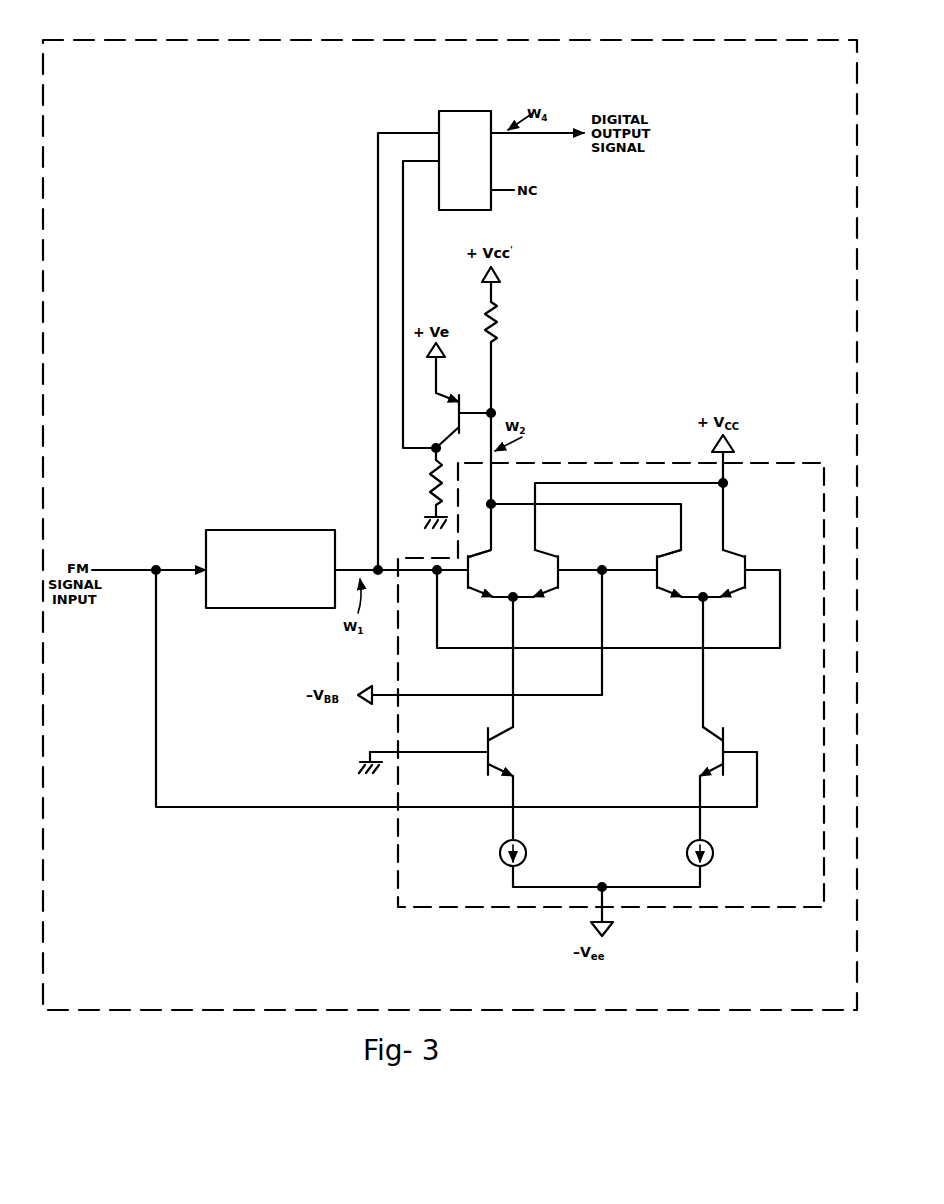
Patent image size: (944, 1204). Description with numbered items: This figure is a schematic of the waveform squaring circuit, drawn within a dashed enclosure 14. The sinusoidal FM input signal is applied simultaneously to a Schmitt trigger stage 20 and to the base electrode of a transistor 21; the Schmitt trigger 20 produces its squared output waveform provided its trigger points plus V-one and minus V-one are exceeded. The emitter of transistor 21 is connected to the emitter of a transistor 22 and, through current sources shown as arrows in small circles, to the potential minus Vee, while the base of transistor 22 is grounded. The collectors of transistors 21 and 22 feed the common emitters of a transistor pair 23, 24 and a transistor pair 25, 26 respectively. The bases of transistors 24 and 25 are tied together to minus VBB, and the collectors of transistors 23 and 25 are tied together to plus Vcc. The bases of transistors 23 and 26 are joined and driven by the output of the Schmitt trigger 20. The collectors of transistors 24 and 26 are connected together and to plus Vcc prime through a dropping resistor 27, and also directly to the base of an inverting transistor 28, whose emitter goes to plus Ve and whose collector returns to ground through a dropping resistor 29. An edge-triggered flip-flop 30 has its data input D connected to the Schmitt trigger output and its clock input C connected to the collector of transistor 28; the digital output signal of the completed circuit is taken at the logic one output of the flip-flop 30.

The FM demodulator / frequency discriminator circuit 14 is at (346, 40).
The Schmitt trigger stage 20 is at (275, 530).
The transistor 21 is at (727, 754).
The transistor 22 is at (485, 745).
The transistor 23 is at (748, 572).
The transistor 24 is at (655, 572).
The transistor 25 is at (561, 572).
The transistor 26 is at (466, 578).
The dropping resistor 27 is at (497, 335).
The inverting transistor 28 is at (461, 404).
The dropping resistor 29 is at (427, 471).
The flip-flop 30 is at (452, 111).